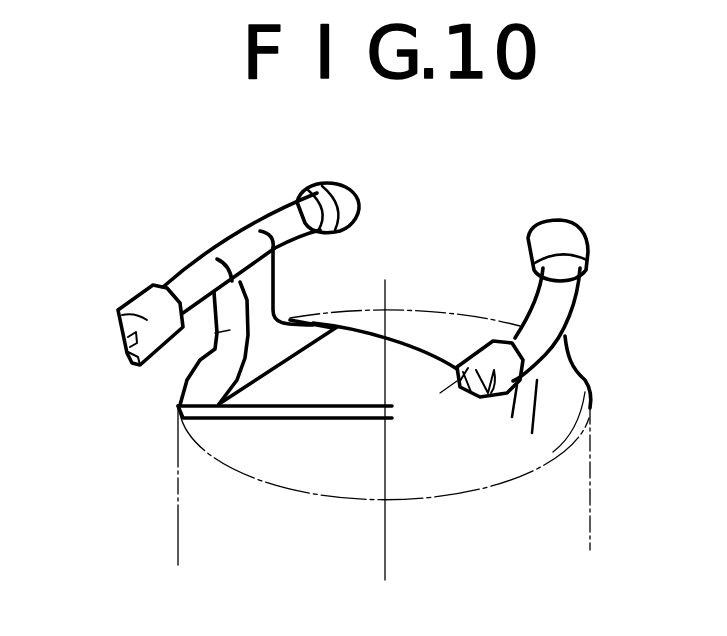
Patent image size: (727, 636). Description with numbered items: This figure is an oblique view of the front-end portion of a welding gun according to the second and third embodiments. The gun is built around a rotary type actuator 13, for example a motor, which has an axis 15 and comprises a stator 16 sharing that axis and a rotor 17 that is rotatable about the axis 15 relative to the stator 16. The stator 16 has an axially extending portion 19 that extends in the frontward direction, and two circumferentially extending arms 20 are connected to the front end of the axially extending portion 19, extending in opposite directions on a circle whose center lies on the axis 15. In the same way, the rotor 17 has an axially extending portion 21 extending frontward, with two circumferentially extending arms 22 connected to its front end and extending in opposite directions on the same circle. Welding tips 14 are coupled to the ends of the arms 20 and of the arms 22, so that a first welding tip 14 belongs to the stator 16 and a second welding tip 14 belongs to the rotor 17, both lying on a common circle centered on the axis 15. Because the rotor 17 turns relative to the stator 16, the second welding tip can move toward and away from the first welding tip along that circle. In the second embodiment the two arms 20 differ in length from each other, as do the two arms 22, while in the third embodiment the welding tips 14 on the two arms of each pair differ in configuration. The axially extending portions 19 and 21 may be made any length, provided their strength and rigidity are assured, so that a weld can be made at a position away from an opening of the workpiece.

The rotary type actuator 13 is at (592, 458).
The welding tip 14 is at (335, 192).
The axis 15 is at (387, 467).
The stator 16 is at (353, 360).
The rotor 17 is at (320, 458).
The axially extending portion 19 is at (228, 327).
The circumferentially extending arm 20 is at (277, 220).
The axially extending portion 21 is at (558, 374).
The circumferentially extending arm 22 is at (530, 343).